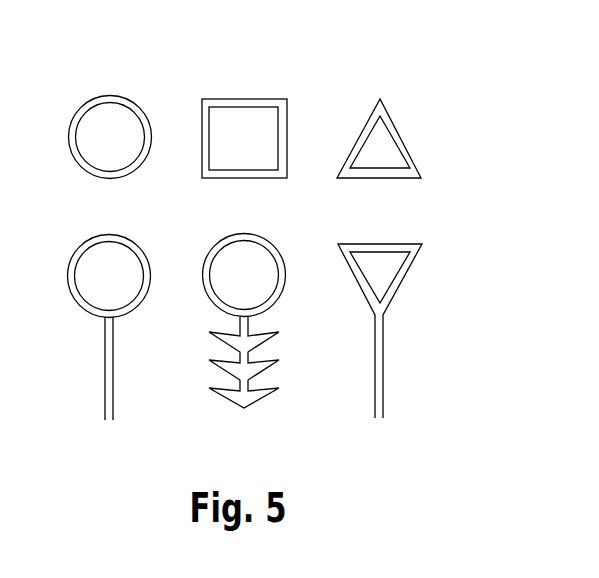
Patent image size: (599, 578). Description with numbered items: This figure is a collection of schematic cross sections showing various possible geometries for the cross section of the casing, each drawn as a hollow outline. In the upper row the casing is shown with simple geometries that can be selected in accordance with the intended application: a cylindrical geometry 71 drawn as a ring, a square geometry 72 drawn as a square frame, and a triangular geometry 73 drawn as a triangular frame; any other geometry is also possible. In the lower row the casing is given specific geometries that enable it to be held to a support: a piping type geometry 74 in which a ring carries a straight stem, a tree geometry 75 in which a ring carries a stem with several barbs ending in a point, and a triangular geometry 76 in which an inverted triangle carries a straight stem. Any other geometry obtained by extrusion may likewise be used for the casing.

The cylindrical geometry 71 is at (100, 95).
The square geometry 72 is at (233, 99).
The triangular geometry 73 is at (373, 109).
The piping type geometry 74 is at (75, 302).
The tree geometry 75 is at (267, 395).
The triangular geometry 76 is at (400, 287).